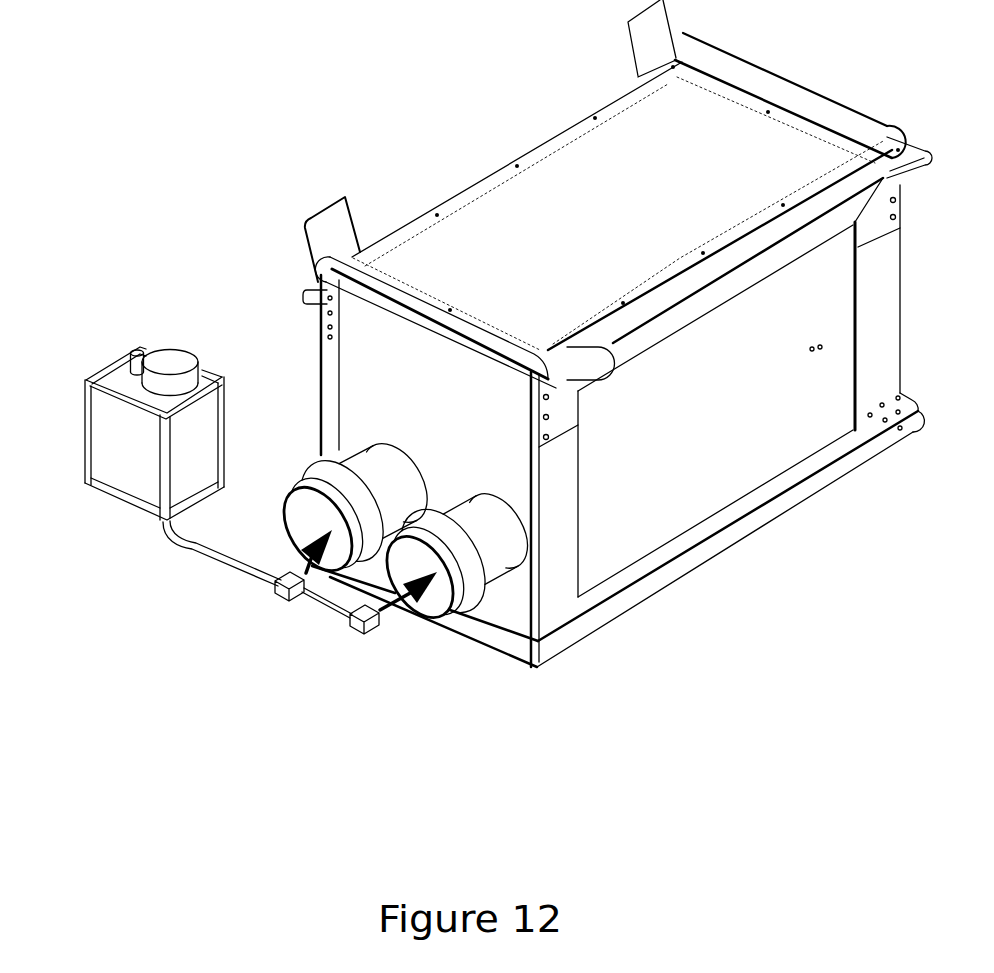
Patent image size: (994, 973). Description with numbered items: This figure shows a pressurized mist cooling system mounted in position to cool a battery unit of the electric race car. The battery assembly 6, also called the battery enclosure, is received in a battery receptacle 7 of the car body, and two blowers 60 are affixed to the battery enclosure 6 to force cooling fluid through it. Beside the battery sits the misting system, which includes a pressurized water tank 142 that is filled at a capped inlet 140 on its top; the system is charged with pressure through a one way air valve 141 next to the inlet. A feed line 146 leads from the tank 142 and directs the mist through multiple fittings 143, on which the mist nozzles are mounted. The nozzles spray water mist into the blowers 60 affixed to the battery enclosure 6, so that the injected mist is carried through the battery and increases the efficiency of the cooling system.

The battery assembly 6 is at (560, 210).
The battery receptacle 7 is at (395, 380).
The blower 60 is at (497, 563).
The capped inlet 140 is at (180, 353).
The one way air valve 141 is at (136, 350).
The pressurized water tank 142 is at (120, 450).
The fittings 143 is at (287, 637).
The feed line 146 is at (193, 550).